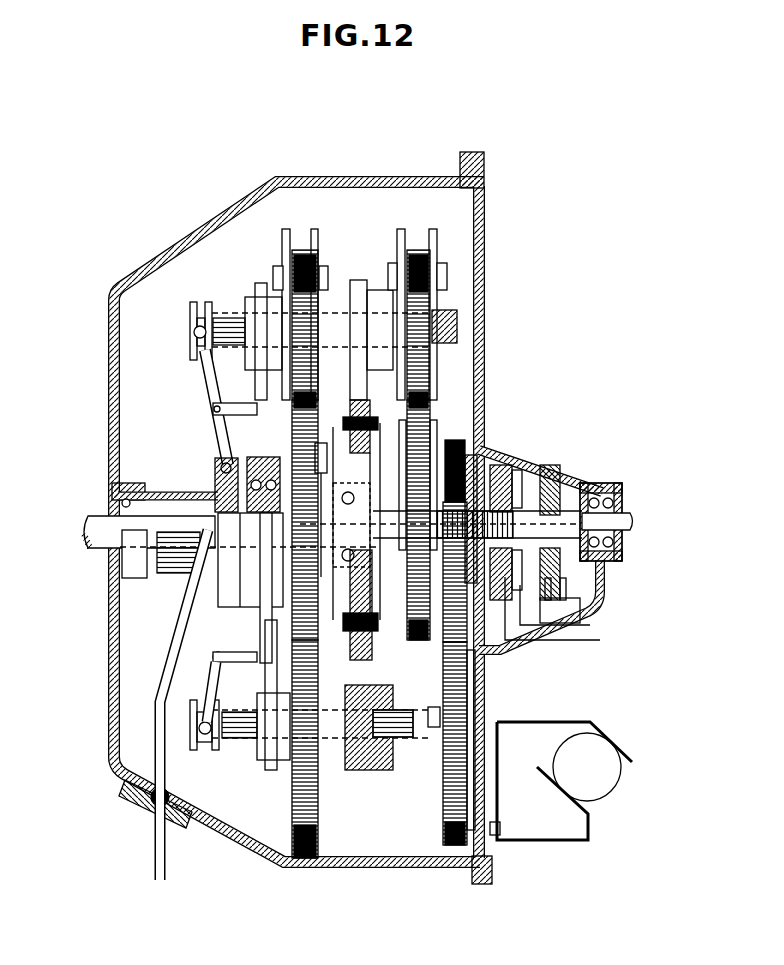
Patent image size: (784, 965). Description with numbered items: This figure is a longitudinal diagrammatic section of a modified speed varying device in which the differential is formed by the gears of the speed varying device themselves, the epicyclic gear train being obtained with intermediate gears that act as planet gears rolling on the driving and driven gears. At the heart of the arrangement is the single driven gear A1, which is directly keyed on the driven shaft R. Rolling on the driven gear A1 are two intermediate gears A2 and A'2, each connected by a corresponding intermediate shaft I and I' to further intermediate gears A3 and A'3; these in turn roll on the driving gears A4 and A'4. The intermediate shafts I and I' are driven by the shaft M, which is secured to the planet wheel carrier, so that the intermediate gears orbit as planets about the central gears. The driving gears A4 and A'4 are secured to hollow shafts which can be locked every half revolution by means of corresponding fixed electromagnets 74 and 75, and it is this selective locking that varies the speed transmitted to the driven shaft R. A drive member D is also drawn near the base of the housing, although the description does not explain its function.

The single driven gear A1 is at (215, 490).
The intermediate gear A2 is at (292, 273).
The intermediate gear A3 is at (438, 287).
The driving gear A4 is at (442, 630).
The intermediate gear A'2 is at (286, 775).
The intermediate gear A'3 is at (433, 791).
The driving gear A'4 is at (500, 511).
The intermediate shaft I is at (187, 348).
The intermediate shaft I' is at (189, 712).
The driven shaft R is at (98, 538).
The shaft M is at (617, 524).
The drive roller D is at (605, 775).
The fixed electromagnet 74 is at (566, 453).
The fixed electromagnet 75 is at (502, 448).